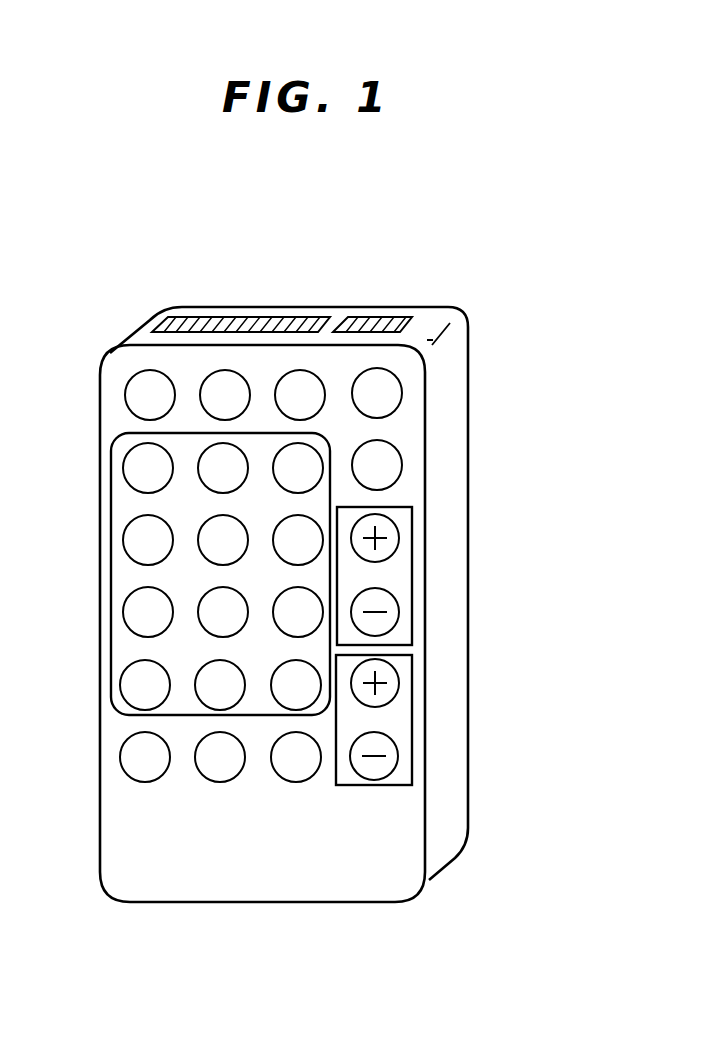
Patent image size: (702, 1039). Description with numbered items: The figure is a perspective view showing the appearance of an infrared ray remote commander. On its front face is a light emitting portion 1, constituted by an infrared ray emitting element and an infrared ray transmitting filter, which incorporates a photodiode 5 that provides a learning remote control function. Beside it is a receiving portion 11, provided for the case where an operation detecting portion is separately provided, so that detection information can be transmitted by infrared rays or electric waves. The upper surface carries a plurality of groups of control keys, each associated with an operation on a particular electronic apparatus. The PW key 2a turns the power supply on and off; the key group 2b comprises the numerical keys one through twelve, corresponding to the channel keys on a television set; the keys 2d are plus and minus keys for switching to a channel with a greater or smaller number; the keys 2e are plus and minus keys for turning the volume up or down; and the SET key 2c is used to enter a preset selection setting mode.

The light emitting portion 1 is at (307, 318).
The photodiode 5 is at (224, 318).
The receiving portion 11 is at (392, 318).
The PW key 2a is at (402, 393).
The key group 2b is at (122, 693).
The SET key 2c is at (152, 778).
The keys 2d is at (400, 535).
The keys 2e is at (400, 680).